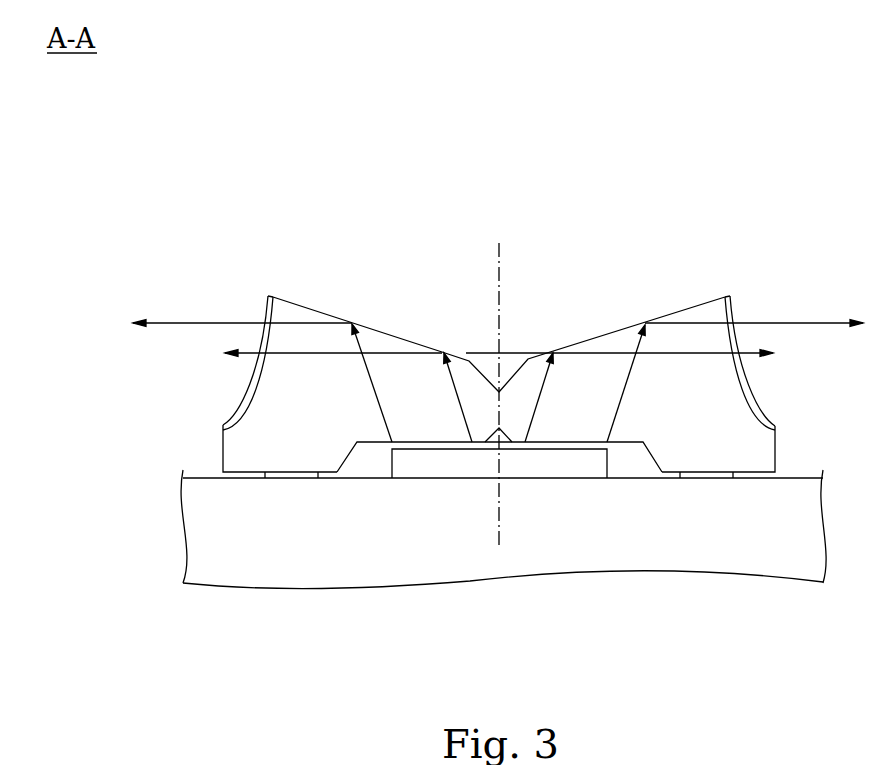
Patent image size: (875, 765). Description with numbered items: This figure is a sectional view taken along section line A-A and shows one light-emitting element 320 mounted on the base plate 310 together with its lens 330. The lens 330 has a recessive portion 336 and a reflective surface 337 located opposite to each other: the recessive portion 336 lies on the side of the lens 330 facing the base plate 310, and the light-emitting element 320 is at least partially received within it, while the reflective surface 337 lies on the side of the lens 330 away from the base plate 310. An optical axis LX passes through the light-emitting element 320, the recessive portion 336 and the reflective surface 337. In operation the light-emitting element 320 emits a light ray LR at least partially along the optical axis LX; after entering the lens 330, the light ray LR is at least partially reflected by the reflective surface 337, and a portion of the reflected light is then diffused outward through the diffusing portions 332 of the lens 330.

The base plate 310 is at (562, 555).
The light-emitting element 320 is at (427, 467).
The lens 330 is at (727, 388).
The diffusing portion 332 is at (755, 408).
The recessive portion 336 is at (633, 467).
The reflective surface 337 is at (593, 338).
The optical axis LX is at (499, 257).
The light ray LR is at (778, 323).